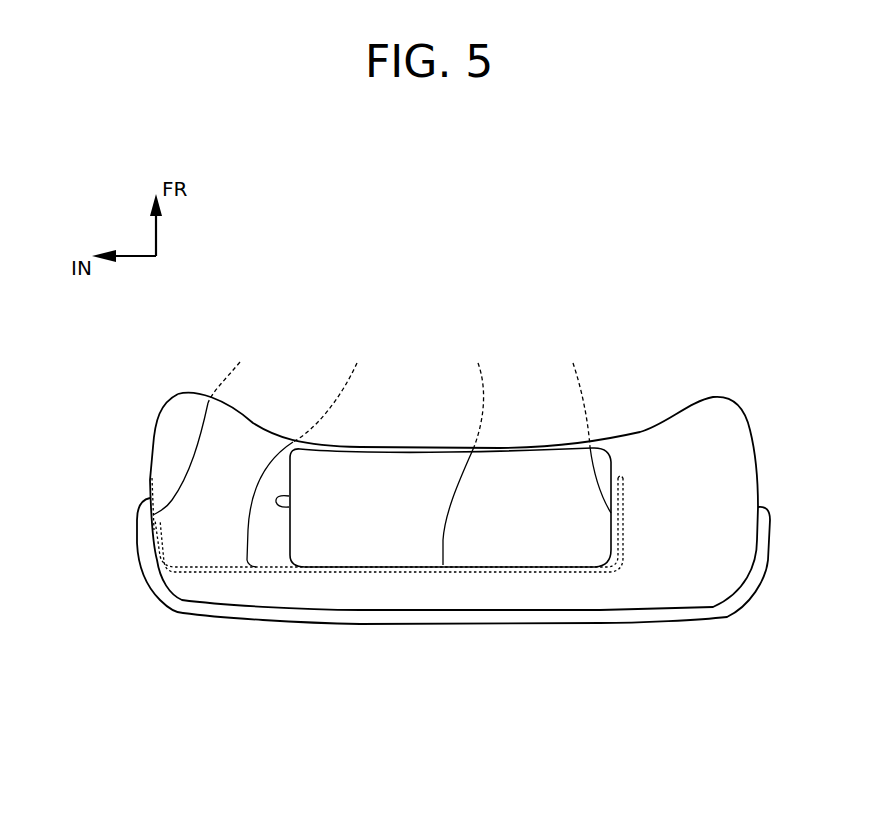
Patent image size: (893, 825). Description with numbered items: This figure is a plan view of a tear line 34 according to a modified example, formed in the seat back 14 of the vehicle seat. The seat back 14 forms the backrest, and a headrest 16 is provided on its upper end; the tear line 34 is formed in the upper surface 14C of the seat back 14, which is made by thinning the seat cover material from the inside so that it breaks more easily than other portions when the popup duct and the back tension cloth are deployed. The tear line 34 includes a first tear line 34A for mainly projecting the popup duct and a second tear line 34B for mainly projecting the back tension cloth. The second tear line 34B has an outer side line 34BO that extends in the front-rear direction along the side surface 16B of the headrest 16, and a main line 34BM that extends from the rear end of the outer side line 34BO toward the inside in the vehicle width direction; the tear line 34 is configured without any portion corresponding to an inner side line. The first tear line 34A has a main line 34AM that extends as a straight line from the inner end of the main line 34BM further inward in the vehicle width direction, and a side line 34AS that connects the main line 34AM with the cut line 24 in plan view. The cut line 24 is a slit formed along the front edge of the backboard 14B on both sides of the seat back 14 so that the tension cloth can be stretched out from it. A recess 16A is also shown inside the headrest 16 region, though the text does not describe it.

The seat back 14 is at (453, 518).
The backboard 14B is at (468, 617).
The upper surface of the seat back 14C is at (664, 430).
The headrest 16 is at (396, 550).
The recess side portion 16A is at (287, 496).
The side surface of the headrest 16B is at (610, 547).
The cut line 24 is at (150, 498).
The tear line 34 is at (557, 300).
The first tear line 34A is at (397, 345).
The side line 34AS is at (226, 425).
The main line 34AM is at (320, 451).
The second tear line 34B is at (607, 345).
The main line 34BM is at (478, 450).
The outer side line 34BO is at (574, 424).